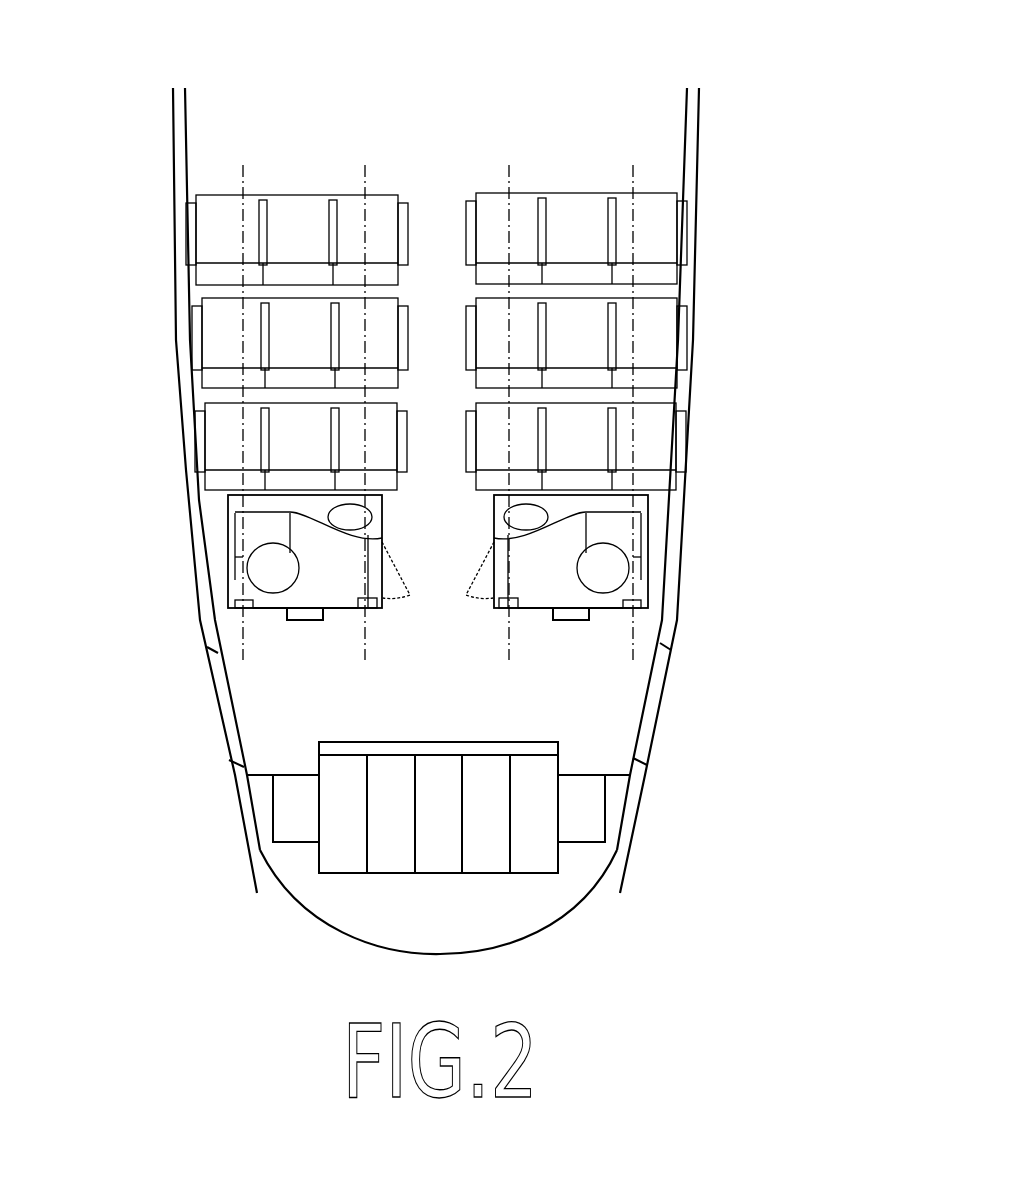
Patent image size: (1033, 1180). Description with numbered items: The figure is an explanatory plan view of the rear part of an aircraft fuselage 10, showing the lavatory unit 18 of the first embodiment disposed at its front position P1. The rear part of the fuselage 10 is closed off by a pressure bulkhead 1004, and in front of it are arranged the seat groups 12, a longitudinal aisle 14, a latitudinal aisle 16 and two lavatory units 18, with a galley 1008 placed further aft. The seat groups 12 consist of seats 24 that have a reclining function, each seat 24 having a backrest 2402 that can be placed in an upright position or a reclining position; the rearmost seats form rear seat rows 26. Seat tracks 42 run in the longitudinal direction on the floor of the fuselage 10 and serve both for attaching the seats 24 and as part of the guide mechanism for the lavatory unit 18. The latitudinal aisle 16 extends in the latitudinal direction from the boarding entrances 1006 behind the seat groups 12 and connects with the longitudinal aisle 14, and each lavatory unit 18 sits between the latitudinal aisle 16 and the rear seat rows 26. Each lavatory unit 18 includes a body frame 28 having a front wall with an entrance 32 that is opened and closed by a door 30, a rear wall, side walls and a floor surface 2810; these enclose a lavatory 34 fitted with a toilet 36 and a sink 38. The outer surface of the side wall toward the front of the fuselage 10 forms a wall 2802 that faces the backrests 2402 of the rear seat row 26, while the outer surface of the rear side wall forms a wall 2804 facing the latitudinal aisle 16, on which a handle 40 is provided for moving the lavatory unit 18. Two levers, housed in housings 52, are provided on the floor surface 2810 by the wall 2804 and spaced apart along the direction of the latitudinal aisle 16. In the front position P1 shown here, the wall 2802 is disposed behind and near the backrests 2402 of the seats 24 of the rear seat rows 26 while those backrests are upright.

The fuselage 10 is at (737, 70).
The seat groups 12 is at (298, 113).
The longitudinal aisle 14 is at (440, 330).
The latitudinal aisle 16 is at (477, 687).
The lavatory unit 18 is at (222, 575).
The seats 24 is at (434, 260).
The rear seat rows 26 is at (168, 440).
The body frame 28 is at (446, 565).
The door 30 is at (478, 570).
The entrance 32 is at (491, 562).
The lavatory 34 is at (537, 486).
The toilet 36 is at (588, 555).
The sink 38 is at (522, 508).
The handle 40 is at (300, 620).
The seat track 42 is at (243, 165).
The housings 52 is at (240, 607).
The backrests 2402 is at (300, 482).
The wall 2802 is at (298, 486).
The wall 2804 is at (343, 614).
The floor surface 2810 is at (556, 578).
The front position P1 is at (654, 563).
The pressure bulkhead 1004 is at (452, 953).
The boarding entrance 1006 is at (213, 707).
The galley 1008 is at (482, 850).